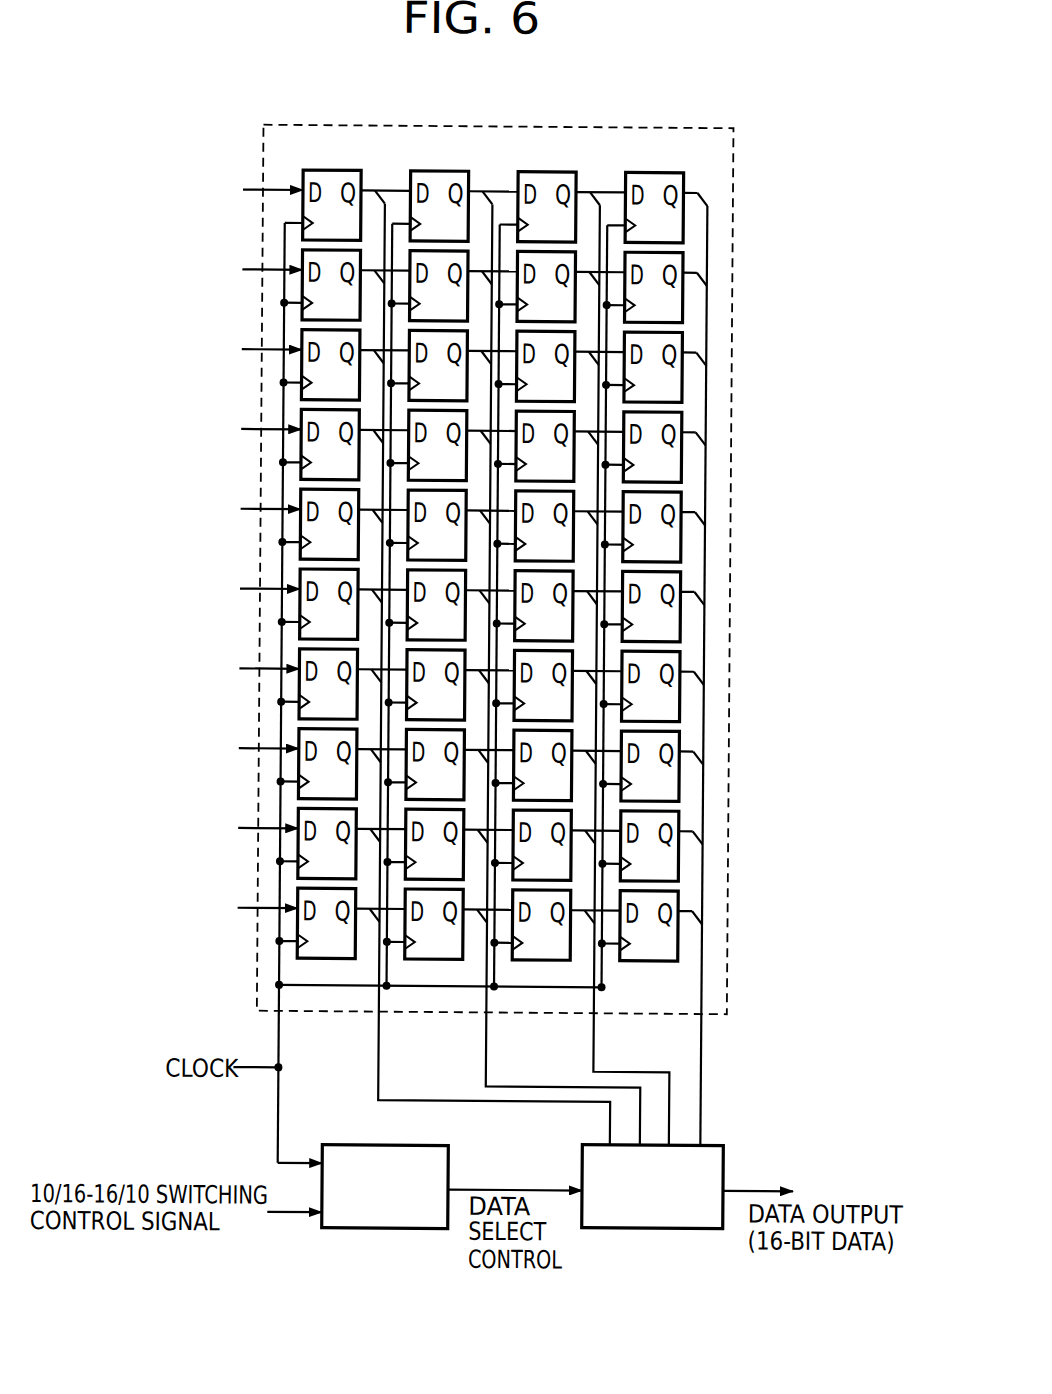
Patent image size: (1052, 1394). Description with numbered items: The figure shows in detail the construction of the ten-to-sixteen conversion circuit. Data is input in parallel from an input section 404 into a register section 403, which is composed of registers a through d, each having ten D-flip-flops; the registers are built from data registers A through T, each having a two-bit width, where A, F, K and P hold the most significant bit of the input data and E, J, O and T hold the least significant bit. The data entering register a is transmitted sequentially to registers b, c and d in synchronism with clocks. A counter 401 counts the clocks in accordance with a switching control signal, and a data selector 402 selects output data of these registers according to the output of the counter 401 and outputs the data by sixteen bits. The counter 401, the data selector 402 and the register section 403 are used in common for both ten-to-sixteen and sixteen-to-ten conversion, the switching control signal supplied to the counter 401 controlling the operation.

The counter 401 is at (378, 1228).
The data selector 402 is at (673, 1226).
The register section 403 is at (659, 126).
The input section 404 is at (229, 130).